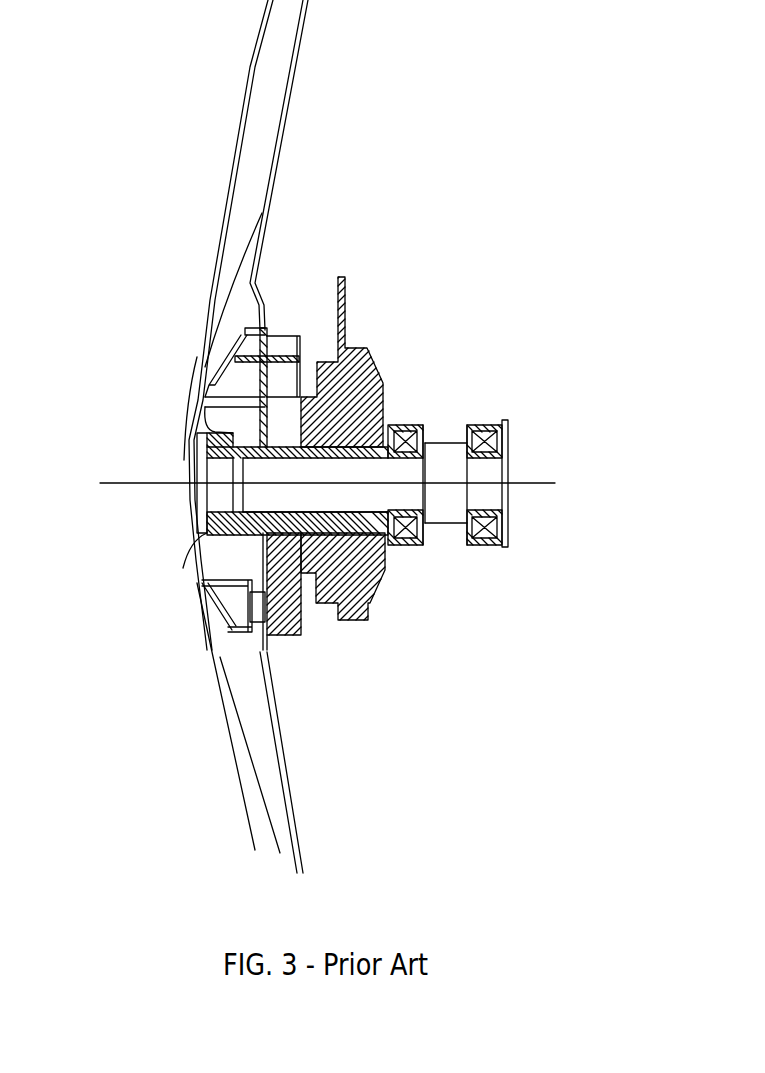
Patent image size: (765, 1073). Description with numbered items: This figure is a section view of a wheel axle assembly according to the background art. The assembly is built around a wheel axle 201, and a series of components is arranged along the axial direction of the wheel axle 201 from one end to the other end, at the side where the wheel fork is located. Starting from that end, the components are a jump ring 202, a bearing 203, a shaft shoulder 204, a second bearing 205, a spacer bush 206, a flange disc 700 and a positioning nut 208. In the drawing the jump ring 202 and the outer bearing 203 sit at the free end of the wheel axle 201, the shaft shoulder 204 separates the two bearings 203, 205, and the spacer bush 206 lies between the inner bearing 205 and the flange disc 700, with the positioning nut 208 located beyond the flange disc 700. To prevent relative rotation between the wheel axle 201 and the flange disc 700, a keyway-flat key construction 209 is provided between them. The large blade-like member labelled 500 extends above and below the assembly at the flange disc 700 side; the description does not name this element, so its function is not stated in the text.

The fan blade 500 is at (265, 143).
The keyway-flat key construction 209 is at (208, 432).
The positioning nut 208 is at (207, 555).
The flange disc 700 is at (300, 633).
The spacer bush 206 is at (385, 570).
The wheel axle 201 is at (480, 475).
The shaft shoulder 204 is at (438, 525).
The bearing 205 is at (413, 421).
The bearing 203 is at (493, 418).
The jump ring 202 is at (505, 547).